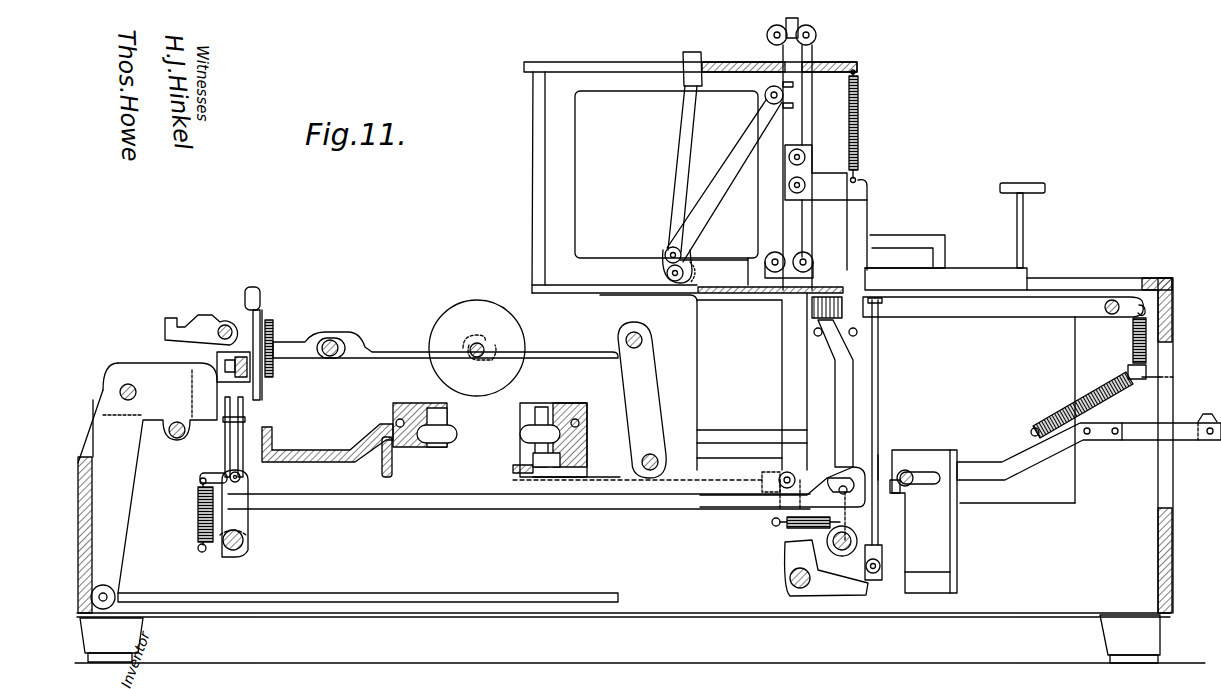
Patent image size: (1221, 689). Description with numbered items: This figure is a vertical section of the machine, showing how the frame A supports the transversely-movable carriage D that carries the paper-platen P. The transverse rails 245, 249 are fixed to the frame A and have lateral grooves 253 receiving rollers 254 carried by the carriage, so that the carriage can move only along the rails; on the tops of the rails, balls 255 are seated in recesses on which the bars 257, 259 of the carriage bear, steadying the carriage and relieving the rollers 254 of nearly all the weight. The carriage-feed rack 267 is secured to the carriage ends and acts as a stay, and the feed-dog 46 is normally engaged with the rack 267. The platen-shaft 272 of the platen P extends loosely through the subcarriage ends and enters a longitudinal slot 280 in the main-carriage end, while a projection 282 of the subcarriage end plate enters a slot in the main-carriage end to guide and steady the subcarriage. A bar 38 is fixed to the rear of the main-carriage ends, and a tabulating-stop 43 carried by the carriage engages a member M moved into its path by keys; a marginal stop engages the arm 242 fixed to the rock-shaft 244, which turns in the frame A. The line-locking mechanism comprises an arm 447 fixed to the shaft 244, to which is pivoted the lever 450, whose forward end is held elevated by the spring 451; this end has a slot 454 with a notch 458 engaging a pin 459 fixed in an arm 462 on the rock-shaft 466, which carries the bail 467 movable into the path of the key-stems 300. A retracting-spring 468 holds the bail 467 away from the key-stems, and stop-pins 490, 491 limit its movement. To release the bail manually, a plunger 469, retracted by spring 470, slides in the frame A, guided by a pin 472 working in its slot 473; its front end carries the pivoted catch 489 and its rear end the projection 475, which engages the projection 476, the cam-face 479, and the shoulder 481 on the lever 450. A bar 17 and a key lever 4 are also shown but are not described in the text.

The key lever 4 is at (228, 325).
The tabulating-stop 43 is at (198, 320).
The bar 38 is at (225, 366).
The member M is at (154, 486).
The arm 242 is at (230, 440).
The spring 451 is at (198, 516).
The arm 447 is at (248, 520).
The rock-shaft 244 is at (243, 546).
The bar 17 is at (398, 597).
The projection 282 is at (331, 340).
The longitudinal slot 280 is at (522, 315).
The carriage D is at (386, 356).
The paper-platen P is at (478, 305).
The platen-shaft 272 is at (486, 347).
The bar 257 is at (395, 411).
The ball 255 is at (396, 423).
The transverse rail 245 is at (403, 448).
The lateral groove 253 is at (437, 445).
The feed-dog 46 is at (517, 460).
The lever 450 is at (465, 506).
The roller 254 is at (527, 435).
The carriage-feed rack 267 is at (544, 468).
The bar 259 is at (575, 405).
The transverse rail 249 is at (586, 448).
The key-stem 300 is at (868, 182).
The bail 467 is at (812, 308).
The fixed stop-pin 490 is at (814, 332).
The fixed stop-pin 491 is at (858, 331).
The arm 462 is at (855, 373).
The pin 459 is at (843, 478).
The shoulder 481 is at (876, 442).
The cam-face 479 is at (915, 466).
The notch 458 is at (850, 491).
The slot 473 is at (925, 476).
The slot 454 is at (833, 481).
The retracting-spring 468 is at (787, 528).
The rock-shaft 466 is at (843, 552).
The projection 475 is at (884, 496).
The pin 472 is at (918, 485).
The projection 476 is at (890, 493).
The spring 470 is at (1088, 378).
The pivoted catch 489 is at (1203, 413).
The plunger 469 is at (1183, 440).
The frame A is at (1175, 285).